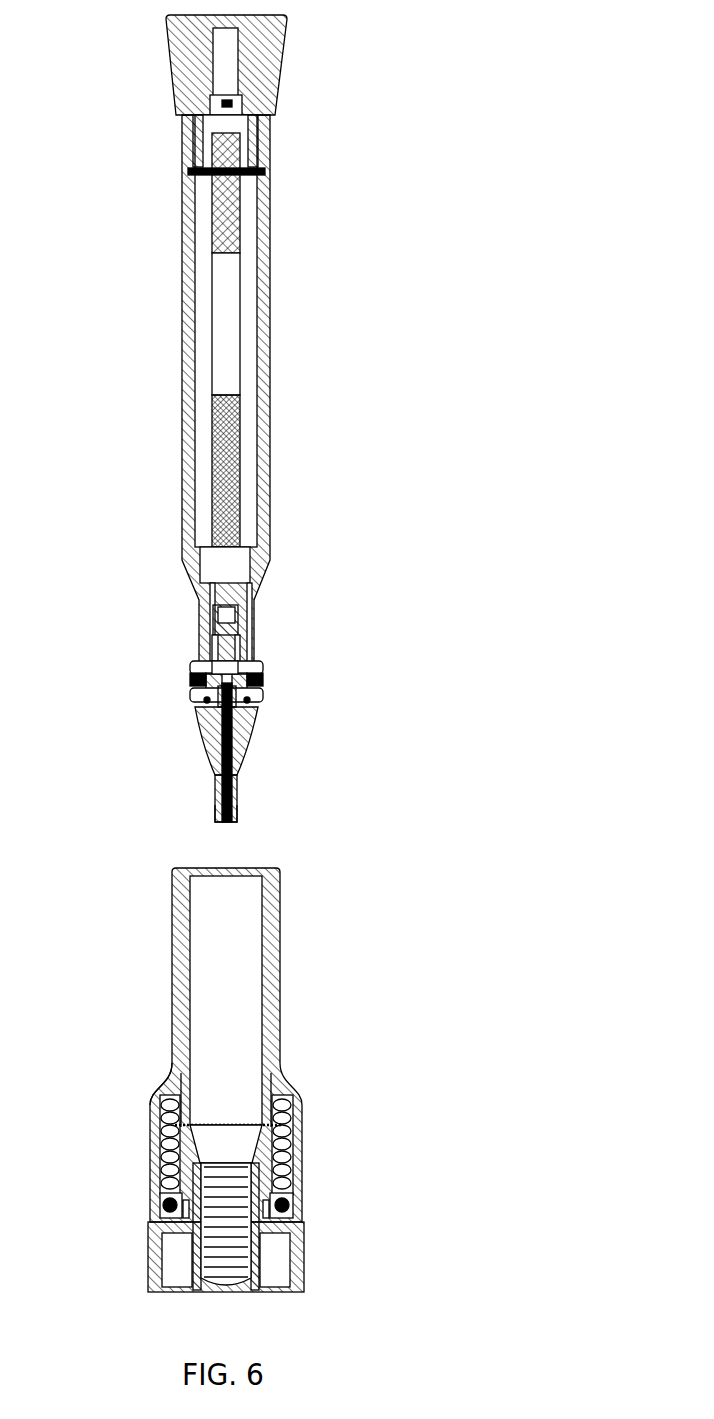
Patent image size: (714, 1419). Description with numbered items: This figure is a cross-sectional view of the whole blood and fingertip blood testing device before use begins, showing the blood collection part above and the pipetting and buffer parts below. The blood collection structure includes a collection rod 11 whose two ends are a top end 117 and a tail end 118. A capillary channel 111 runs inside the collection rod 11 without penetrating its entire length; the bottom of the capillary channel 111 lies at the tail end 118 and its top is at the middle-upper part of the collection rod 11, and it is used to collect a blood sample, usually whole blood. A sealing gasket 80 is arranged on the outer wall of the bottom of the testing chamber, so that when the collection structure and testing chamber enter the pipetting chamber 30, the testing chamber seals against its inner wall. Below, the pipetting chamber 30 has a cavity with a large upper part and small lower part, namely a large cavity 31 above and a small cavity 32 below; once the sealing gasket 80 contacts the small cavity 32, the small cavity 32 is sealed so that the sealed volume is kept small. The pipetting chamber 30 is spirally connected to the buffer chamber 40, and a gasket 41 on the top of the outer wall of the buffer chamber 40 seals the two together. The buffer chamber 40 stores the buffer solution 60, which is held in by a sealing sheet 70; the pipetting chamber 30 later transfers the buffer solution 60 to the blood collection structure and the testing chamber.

The collection rod 11 is at (237, 750).
The capillary channel 111 is at (218, 787).
The top end of the collection rod 117 is at (237, 595).
The tail end of the collection rod 118 is at (237, 815).
The sealing gasket 80 is at (180, 668).
The pipetting chamber 30 is at (280, 1022).
The large cavity 31 is at (177, 952).
The small cavity 32 is at (180, 1080).
The buffer chamber 40 is at (305, 1243).
The gasket 41 is at (287, 1198).
The buffer solution 60 is at (165, 1205).
The sealing sheet 70 is at (200, 1122).